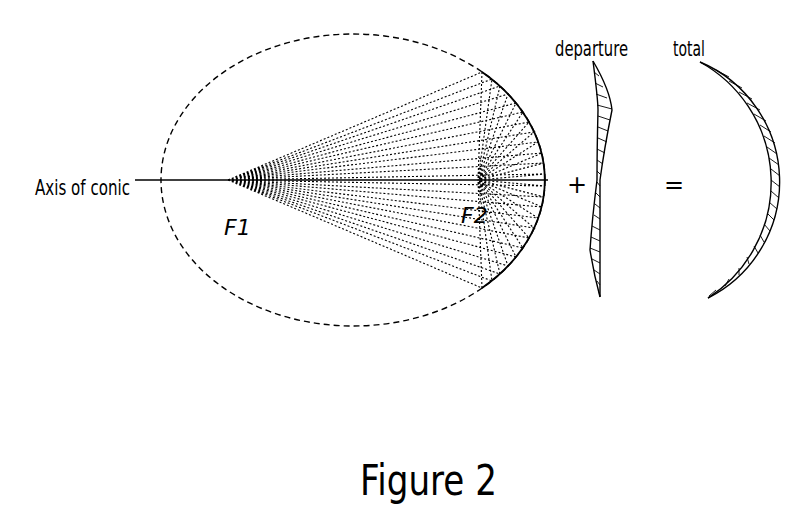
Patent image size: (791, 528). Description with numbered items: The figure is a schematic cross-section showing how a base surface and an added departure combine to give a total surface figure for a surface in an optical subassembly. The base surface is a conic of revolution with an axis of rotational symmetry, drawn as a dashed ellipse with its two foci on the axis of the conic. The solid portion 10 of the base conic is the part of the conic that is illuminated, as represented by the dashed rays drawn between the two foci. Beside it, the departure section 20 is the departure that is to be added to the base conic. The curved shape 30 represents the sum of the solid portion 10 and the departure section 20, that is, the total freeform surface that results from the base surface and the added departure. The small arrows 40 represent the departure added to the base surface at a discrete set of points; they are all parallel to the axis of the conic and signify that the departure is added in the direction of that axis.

The solid portion of the base conic 10 is at (494, 82).
The departure section 20 is at (601, 298).
The curved shape 30 is at (712, 300).
The small arrows 40 is at (500, 262).